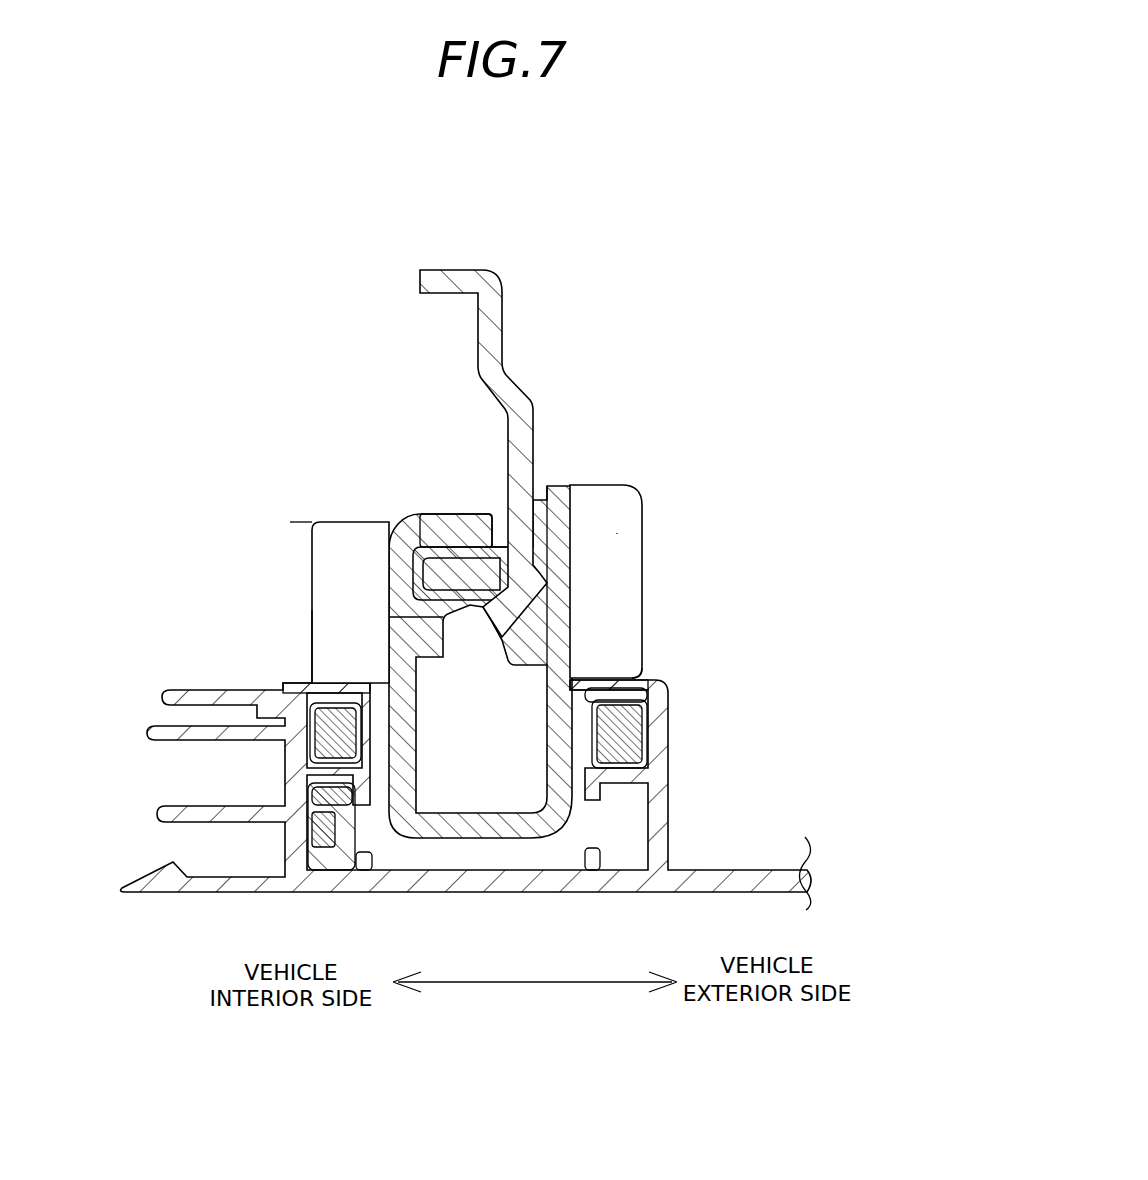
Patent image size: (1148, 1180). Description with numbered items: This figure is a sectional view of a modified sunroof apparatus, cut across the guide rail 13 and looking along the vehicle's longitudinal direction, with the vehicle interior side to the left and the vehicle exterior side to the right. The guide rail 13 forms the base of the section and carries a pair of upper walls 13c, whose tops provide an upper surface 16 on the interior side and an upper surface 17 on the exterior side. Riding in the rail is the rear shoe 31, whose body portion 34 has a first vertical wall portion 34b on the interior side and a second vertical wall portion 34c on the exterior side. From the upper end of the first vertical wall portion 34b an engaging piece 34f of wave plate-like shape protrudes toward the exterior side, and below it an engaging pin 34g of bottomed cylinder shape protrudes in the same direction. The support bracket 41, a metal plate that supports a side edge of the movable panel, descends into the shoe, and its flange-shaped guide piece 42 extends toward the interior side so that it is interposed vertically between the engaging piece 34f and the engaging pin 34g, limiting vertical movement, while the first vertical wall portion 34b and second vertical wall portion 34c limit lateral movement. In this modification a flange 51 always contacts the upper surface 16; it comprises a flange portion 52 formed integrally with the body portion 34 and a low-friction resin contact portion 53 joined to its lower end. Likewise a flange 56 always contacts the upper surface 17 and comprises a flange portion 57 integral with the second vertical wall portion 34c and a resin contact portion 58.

The guide rail 13 is at (678, 850).
The upper wall 13c is at (300, 680).
The upper surface 16 is at (358, 682).
The upper surface 17 is at (607, 673).
The rear shoe 31 is at (627, 483).
The body portion 34 is at (547, 639).
The first vertical wall portion 34b is at (416, 748).
The second vertical wall portion 34c is at (574, 607).
The engaging piece 34f is at (482, 510).
The engaging pin 34g is at (448, 670).
The support bracket 41 is at (523, 403).
The guide piece 42 is at (445, 555).
The flange 51 is at (240, 593).
The flange portion 52 is at (350, 543).
The contact portion 53 is at (337, 682).
The flange 56 is at (740, 560).
The flange portion 57 is at (620, 533).
The contact portion 58 is at (643, 672).